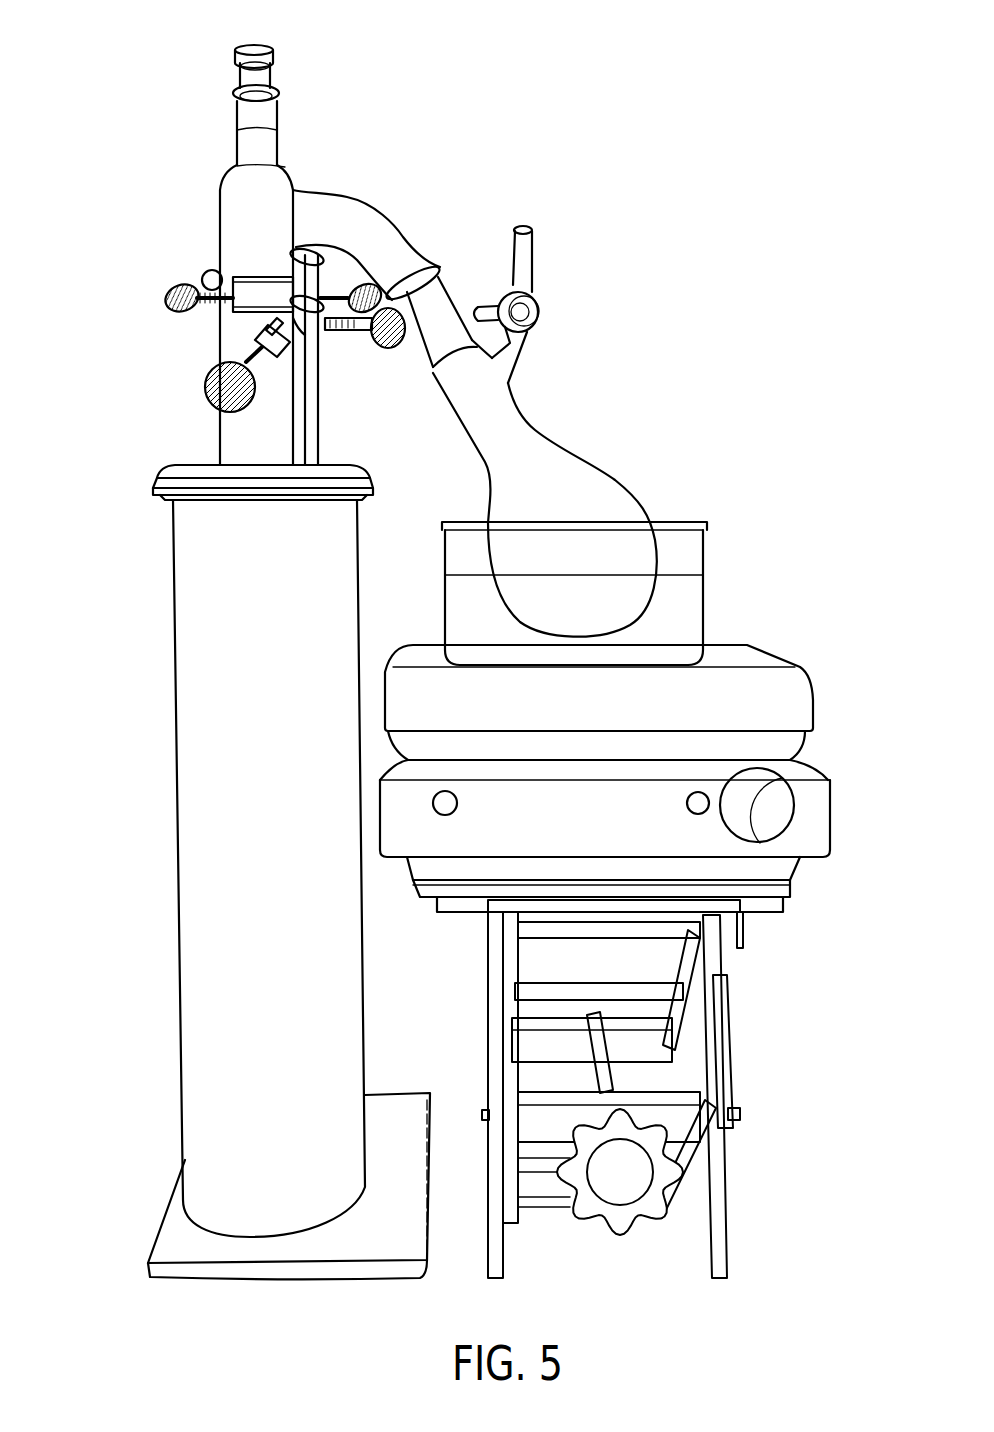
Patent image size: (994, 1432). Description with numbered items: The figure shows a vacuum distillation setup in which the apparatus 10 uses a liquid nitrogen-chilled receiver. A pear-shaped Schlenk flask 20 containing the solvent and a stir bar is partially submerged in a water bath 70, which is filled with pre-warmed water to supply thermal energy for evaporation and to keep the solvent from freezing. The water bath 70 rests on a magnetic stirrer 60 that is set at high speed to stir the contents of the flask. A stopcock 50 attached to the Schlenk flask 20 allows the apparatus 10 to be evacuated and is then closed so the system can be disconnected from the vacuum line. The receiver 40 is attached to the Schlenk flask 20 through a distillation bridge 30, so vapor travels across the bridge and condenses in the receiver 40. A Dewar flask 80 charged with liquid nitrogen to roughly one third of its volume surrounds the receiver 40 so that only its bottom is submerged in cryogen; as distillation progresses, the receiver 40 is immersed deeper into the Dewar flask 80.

The apparatus 10 is at (627, 73).
The Schlenk flask 20 is at (617, 460).
The distillation bridge 30 is at (395, 185).
The receiver 40 is at (188, 208).
The stopcock 50 is at (550, 252).
The magnetic stirrer 60 is at (835, 687).
The water bath 70 is at (737, 575).
The Dewar flask 80 is at (128, 638).